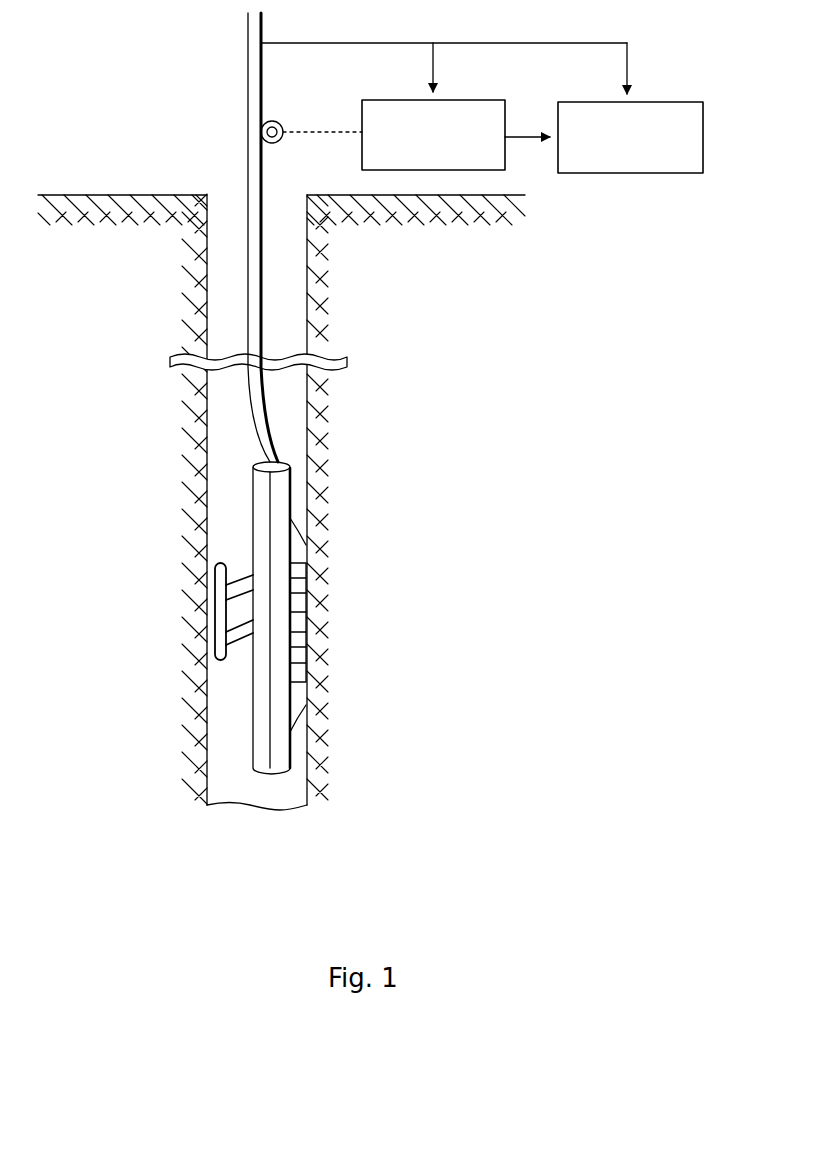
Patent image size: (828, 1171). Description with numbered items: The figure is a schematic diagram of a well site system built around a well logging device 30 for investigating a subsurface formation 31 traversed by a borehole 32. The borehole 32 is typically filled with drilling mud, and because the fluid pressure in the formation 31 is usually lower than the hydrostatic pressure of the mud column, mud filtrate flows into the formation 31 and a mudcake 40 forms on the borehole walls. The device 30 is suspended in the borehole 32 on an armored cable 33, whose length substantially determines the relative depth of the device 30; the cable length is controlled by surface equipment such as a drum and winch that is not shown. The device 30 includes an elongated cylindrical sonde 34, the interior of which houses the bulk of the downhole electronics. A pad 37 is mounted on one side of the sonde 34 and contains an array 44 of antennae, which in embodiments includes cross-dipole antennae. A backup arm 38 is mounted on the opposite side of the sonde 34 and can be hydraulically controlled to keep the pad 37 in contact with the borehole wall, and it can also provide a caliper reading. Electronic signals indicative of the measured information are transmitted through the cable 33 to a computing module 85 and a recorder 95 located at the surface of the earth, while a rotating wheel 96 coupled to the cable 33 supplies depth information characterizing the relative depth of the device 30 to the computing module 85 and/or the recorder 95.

The well logging device 30 is at (283, 445).
The subsurface formation 31 is at (160, 196).
The borehole 32 is at (231, 262).
The armored cable 33 is at (247, 122).
The elongated cylindrical sonde 34 is at (262, 545).
The pad 37 is at (296, 541).
The backup arm 38 is at (208, 596).
The mudcake 40 is at (212, 478).
The array of antennae 44 is at (316, 611).
The computing module 85 is at (362, 110).
The recorder 95 is at (647, 101).
The rotating wheel 96 is at (283, 141).